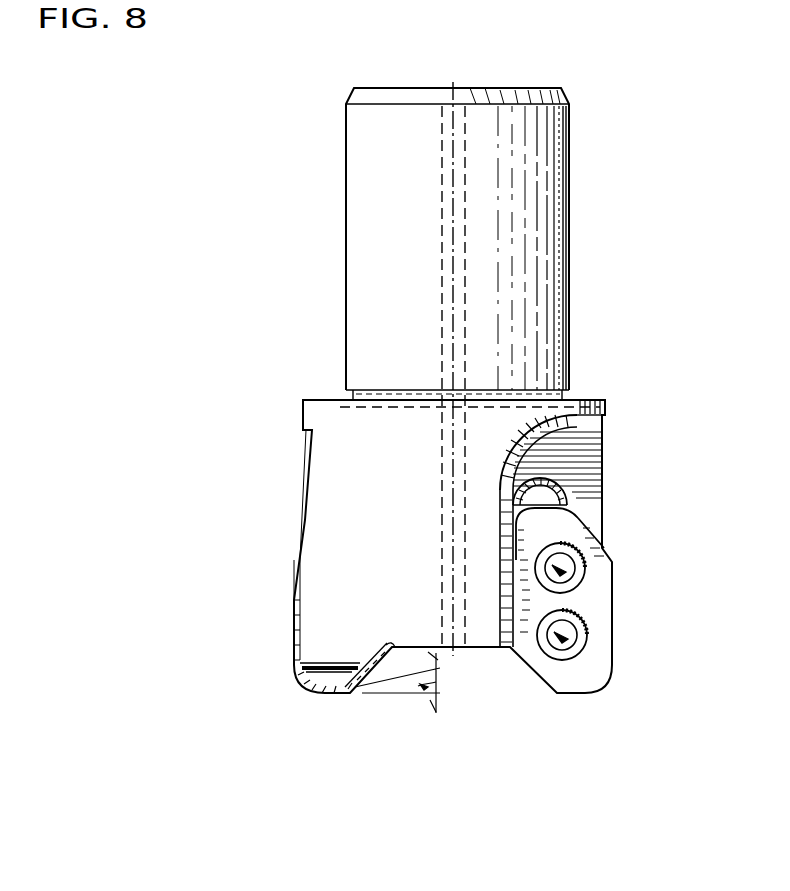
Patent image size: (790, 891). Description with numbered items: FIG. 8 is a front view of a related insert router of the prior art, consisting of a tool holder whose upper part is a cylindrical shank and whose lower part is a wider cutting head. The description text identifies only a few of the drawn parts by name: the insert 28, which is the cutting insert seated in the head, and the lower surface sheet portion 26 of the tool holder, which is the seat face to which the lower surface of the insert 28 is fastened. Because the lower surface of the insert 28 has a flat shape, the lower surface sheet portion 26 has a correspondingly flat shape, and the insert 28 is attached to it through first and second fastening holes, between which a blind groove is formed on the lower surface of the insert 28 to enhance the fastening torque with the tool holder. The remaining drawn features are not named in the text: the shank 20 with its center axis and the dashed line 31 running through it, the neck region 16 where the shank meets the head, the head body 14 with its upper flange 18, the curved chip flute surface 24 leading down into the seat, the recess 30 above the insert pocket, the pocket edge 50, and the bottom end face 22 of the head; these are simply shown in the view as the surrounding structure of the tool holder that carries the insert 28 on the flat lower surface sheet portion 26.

The cutter head body 14 is at (612, 409).
The undercut / neck between shank and head 16 is at (385, 392).
The top flange of head 18 is at (588, 399).
The shank 20 is at (447, 149).
The bottom end face 22 is at (476, 652).
The curved chip flute surface 24 is at (598, 440).
The lower surface sheet portion 26 is at (588, 463).
The insert 28 is at (620, 598).
The arcuate recess 30 is at (570, 487).
The internal coolant bore 31 is at (442, 220).
The pocket edge 50 is at (582, 505).